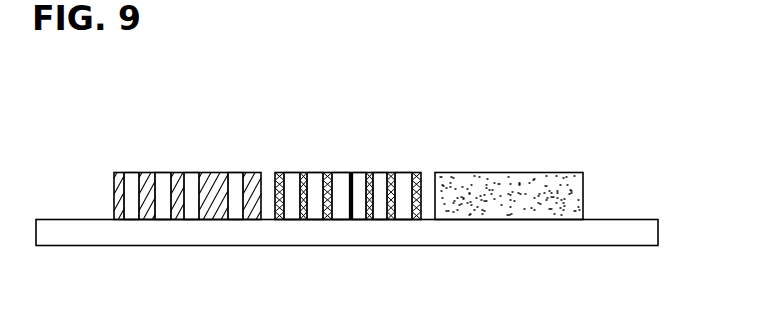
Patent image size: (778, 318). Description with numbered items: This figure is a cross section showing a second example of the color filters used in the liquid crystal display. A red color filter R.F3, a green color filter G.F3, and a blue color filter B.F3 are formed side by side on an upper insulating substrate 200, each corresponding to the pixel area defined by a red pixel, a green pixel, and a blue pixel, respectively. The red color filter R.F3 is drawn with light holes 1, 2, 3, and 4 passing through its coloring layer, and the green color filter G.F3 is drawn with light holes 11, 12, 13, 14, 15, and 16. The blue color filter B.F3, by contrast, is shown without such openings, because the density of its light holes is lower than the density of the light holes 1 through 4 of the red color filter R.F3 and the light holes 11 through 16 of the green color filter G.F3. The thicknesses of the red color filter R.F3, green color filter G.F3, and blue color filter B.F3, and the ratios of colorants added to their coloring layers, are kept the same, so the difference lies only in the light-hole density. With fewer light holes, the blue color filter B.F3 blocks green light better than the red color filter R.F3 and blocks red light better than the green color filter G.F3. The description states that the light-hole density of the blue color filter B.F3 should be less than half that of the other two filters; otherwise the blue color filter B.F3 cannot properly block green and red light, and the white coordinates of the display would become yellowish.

The light hole 1 is at (128, 189).
The light hole 2 is at (189, 172).
The light hole 3 is at (163, 210).
The light hole 4 is at (233, 210).
The light hole 11 is at (292, 208).
The light hole 12 is at (314, 185).
The light hole 13 is at (357, 185).
The light hole 14 is at (403, 185).
The light hole 15 is at (340, 205).
The light hole 16 is at (379, 205).
The upper insulating substrate 200 is at (633, 226).
The red color filter R.F3 is at (167, 191).
The green color filter G.F3 is at (347, 180).
The blue color filter B.F3 is at (552, 180).